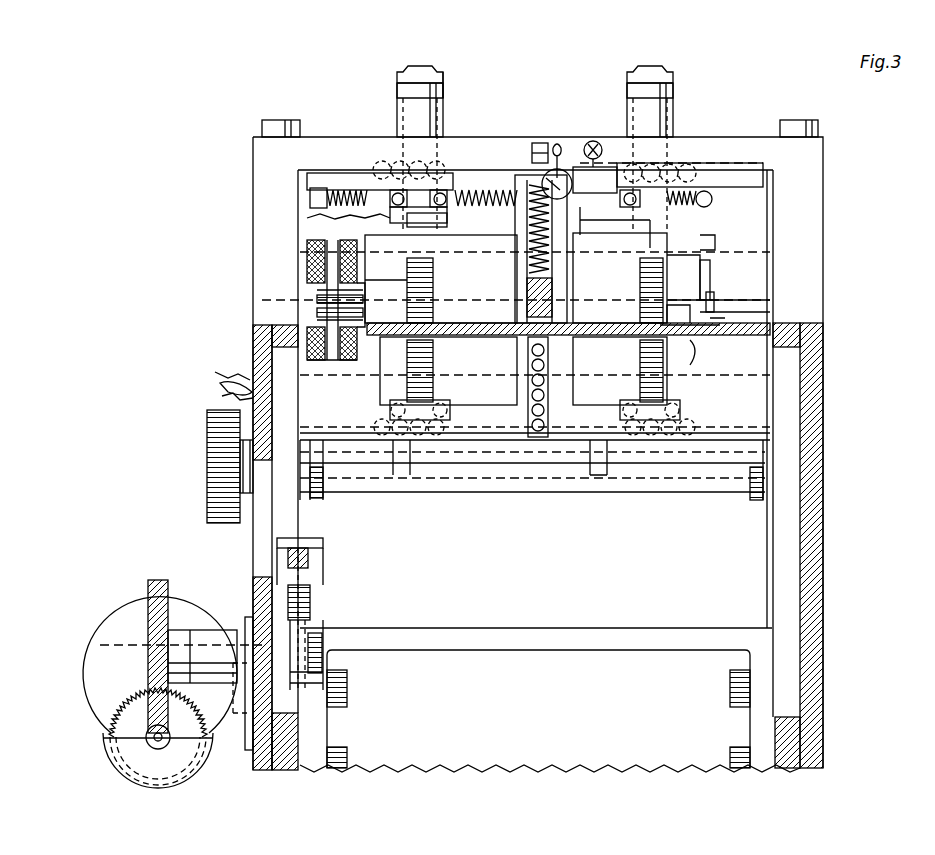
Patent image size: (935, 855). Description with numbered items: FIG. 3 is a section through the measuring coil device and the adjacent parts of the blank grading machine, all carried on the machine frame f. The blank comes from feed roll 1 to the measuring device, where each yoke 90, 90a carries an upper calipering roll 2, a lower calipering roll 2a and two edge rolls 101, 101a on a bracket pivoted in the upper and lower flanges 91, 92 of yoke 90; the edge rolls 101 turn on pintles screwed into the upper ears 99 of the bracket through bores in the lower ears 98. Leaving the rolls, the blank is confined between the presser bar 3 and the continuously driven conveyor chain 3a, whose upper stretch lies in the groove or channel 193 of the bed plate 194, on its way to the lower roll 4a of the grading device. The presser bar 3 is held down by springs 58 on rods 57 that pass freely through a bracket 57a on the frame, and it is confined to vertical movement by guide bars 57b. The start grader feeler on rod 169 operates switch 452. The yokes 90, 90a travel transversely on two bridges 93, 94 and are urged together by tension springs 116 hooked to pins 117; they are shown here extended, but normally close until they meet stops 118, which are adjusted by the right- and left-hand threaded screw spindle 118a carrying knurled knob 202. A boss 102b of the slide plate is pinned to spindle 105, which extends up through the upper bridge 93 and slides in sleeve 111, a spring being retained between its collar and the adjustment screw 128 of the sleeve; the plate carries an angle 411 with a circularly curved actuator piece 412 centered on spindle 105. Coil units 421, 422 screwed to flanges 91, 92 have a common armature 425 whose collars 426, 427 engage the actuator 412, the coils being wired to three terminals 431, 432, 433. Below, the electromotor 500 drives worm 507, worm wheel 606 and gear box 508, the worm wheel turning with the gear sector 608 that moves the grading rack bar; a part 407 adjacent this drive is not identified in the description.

The feed roll 1 is at (470, 248).
The upper calipering roll 2 is at (420, 268).
The lower calipering roll 2a is at (420, 345).
The presser bar 3 is at (545, 290).
The conveyor chain 3a is at (575, 330).
The lower roll of grading device 4a is at (523, 371).
The rod 57 is at (523, 185).
The bracket 57a is at (515, 180).
The guide bar 57b is at (500, 210).
The spring 58 is at (552, 215).
The yoke 90 is at (690, 378).
The yoke 90a is at (662, 227).
The upper flange of yoke 91 is at (393, 178).
The lower flange of yoke 92 is at (430, 475).
The upper bridge 93 is at (700, 140).
The bridge 94 is at (722, 485).
The lower ear of bracket 98 is at (680, 372).
The upper ear of bracket 99 is at (708, 305).
The edge roll 101 is at (305, 318).
The edge roll 101a is at (660, 325).
The boss of plate 102b is at (710, 245).
The spindle 105 is at (408, 66).
The sleeve 111 is at (447, 128).
The tension spring 116 is at (340, 190).
The pin 117 is at (705, 200).
The stop 118 is at (603, 420).
The screw spindle 118a is at (397, 470).
The adjustment screw 128 is at (443, 86).
The rod 169 is at (558, 170).
The groove or channel 193 is at (520, 340).
The bed plate 194 is at (735, 340).
The knurled knob 202 is at (207, 440).
The shaft 407 is at (205, 655).
The angle 411 is at (704, 283).
The actuator piece 412 is at (715, 320).
The coil unit 421 is at (307, 250).
The coil unit 422 is at (305, 345).
The armature 425 is at (305, 290).
The collar 426 is at (305, 297).
The collar 427 is at (305, 310).
The terminal 431 is at (215, 367).
The terminal 432 is at (218, 383).
The terminal 433 is at (222, 395).
The switch 452 is at (593, 141).
The electromotor 500 is at (118, 622).
The worm 507 is at (148, 735).
The gear box 508 is at (180, 760).
The worm wheel 606 is at (160, 580).
The gear sector 608 is at (313, 625).
The frame f is at (812, 370).